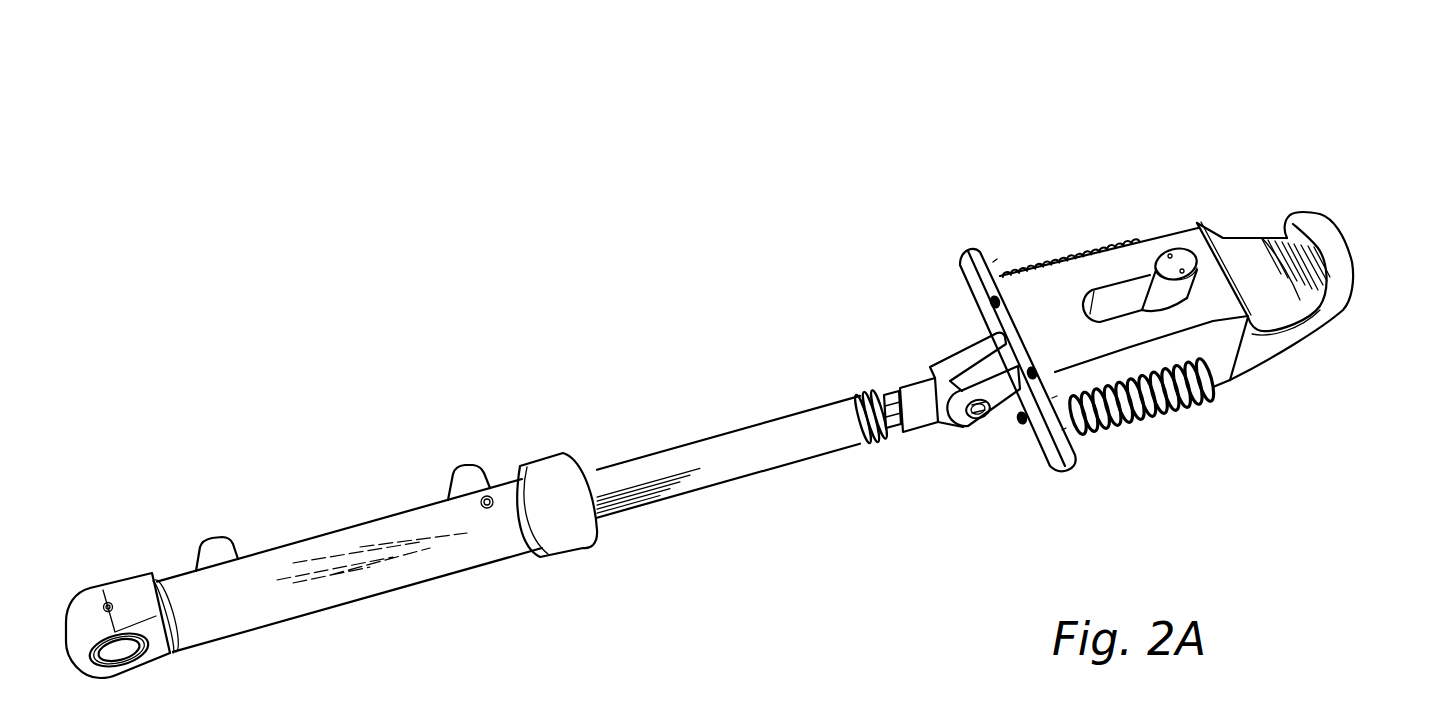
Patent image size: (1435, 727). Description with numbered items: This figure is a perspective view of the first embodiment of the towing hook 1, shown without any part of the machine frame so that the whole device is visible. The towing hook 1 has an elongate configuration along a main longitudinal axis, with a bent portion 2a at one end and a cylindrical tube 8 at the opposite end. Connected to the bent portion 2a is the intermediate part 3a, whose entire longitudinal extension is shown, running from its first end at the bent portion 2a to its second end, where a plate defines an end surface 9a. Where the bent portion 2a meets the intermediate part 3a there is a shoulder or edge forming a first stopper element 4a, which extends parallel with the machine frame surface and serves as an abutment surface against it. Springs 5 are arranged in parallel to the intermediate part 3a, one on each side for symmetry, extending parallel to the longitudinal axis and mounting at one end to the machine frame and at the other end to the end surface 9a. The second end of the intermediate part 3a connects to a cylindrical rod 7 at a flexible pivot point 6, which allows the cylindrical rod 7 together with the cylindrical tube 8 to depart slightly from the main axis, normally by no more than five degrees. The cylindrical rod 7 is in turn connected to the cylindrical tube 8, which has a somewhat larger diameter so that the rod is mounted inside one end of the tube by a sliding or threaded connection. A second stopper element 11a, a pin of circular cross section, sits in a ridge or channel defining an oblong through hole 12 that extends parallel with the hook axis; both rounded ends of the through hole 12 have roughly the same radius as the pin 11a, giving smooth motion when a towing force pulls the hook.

The towing hook 1 is at (1290, 128).
The bent portion 2a is at (1332, 288).
The intermediate part 3a is at (1110, 367).
The first stopper element 4a is at (1222, 245).
The spring 5 is at (1190, 404).
The flexible pivot point 6 is at (977, 420).
The cylindrical rod 7 is at (748, 467).
The cylindrical tube 8 is at (413, 572).
The end surface 9a is at (1055, 433).
The second stopper element 11a is at (1178, 258).
The oblong through hole 12 is at (1118, 300).